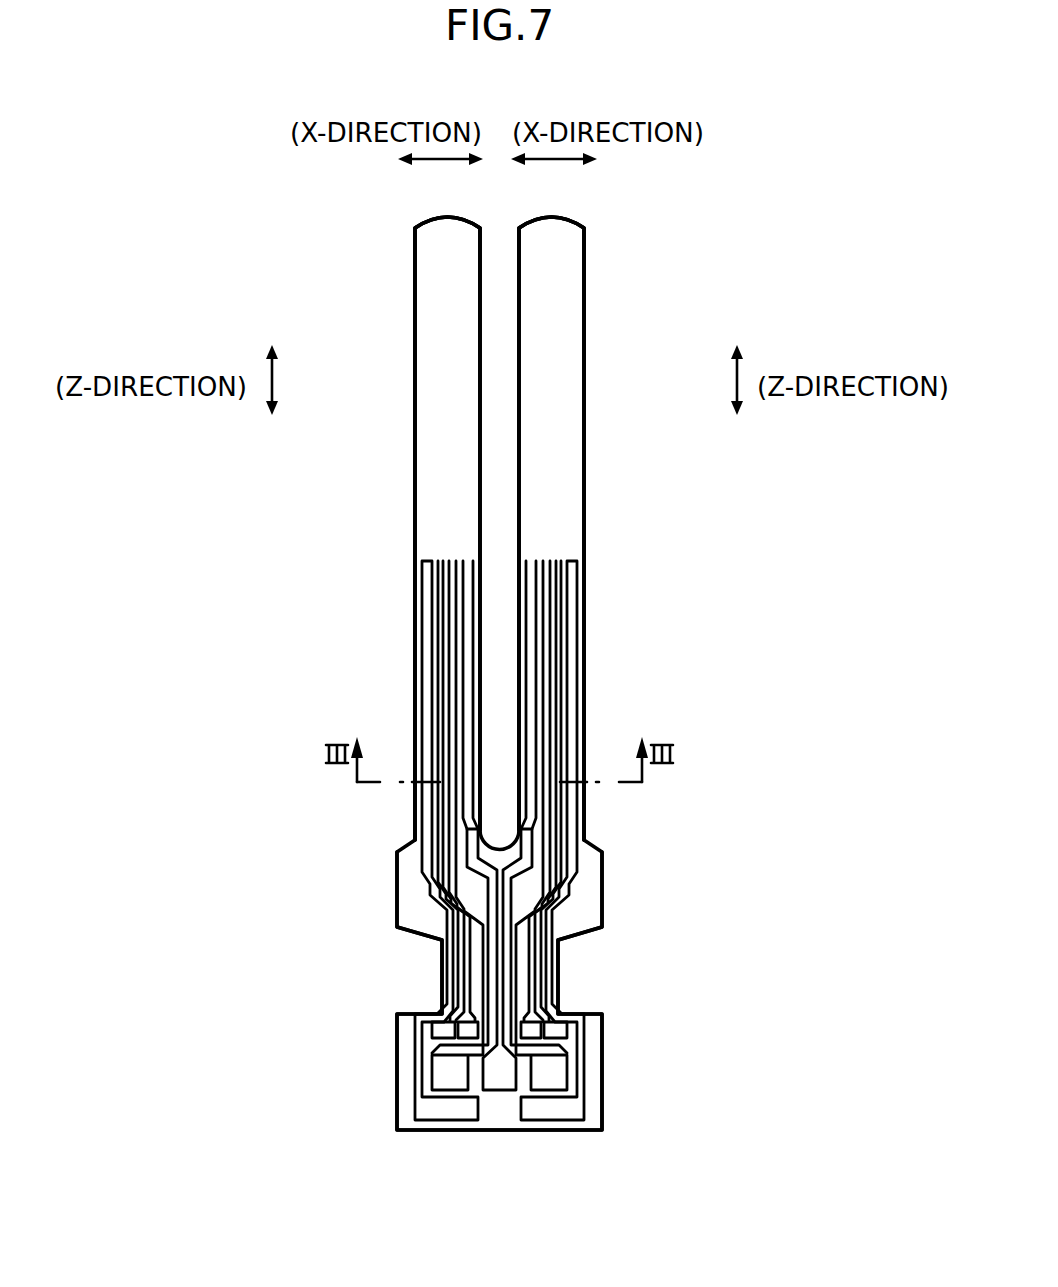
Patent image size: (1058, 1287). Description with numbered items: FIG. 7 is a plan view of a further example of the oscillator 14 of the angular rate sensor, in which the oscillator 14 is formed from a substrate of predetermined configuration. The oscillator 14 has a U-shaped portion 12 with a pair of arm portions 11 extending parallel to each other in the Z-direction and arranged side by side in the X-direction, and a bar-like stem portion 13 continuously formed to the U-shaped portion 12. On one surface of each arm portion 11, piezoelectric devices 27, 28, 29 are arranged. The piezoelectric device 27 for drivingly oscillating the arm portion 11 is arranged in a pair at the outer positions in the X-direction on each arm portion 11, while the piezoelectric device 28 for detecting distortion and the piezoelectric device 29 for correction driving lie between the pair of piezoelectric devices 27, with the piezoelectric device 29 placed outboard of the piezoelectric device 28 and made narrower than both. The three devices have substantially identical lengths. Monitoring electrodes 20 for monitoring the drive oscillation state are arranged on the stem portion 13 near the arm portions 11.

The arm portion 11 is at (425, 341).
The U-shaped portion 12 is at (695, 240).
The stem portion 13 is at (695, 898).
The oscillator 14 is at (316, 235).
The monitoring electrode 20 is at (528, 856).
The piezoelectric device 27 is at (468, 567).
The piezoelectric device 28 is at (450, 610).
The piezoelectric device 29 is at (440, 658).